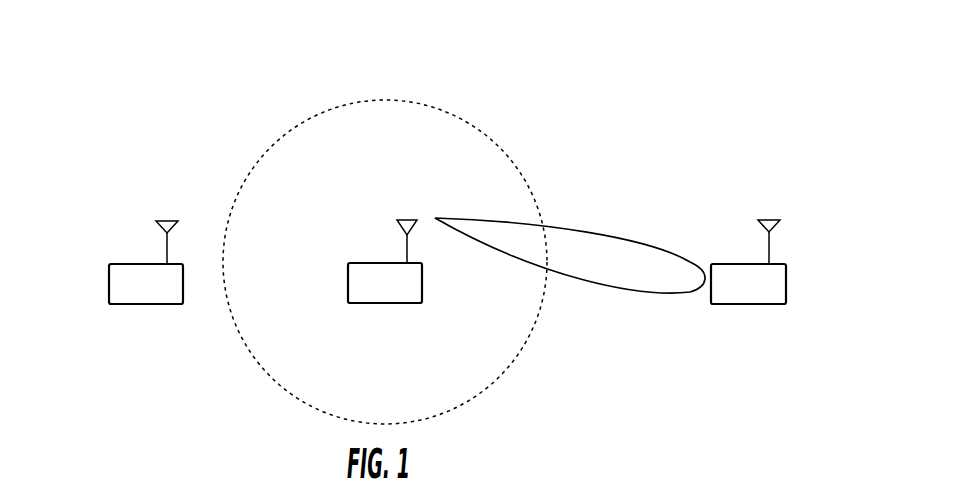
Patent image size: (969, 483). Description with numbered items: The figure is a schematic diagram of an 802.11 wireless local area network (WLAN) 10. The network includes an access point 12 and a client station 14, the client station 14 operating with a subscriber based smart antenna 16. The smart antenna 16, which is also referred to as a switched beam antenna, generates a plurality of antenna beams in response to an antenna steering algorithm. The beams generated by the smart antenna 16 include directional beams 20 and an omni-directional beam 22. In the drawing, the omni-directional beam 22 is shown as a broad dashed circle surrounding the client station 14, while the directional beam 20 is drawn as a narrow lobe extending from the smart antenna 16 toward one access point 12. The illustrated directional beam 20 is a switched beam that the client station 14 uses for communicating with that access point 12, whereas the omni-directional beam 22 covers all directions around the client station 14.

The 802.11 wireless local area network (WLAN) 10 is at (578, 66).
The access point 12 is at (109, 280).
The client station 14 is at (347, 282).
The smart antenna 16 is at (397, 227).
The directional beam 20 is at (585, 223).
The omni-directional beam 22 is at (500, 140).